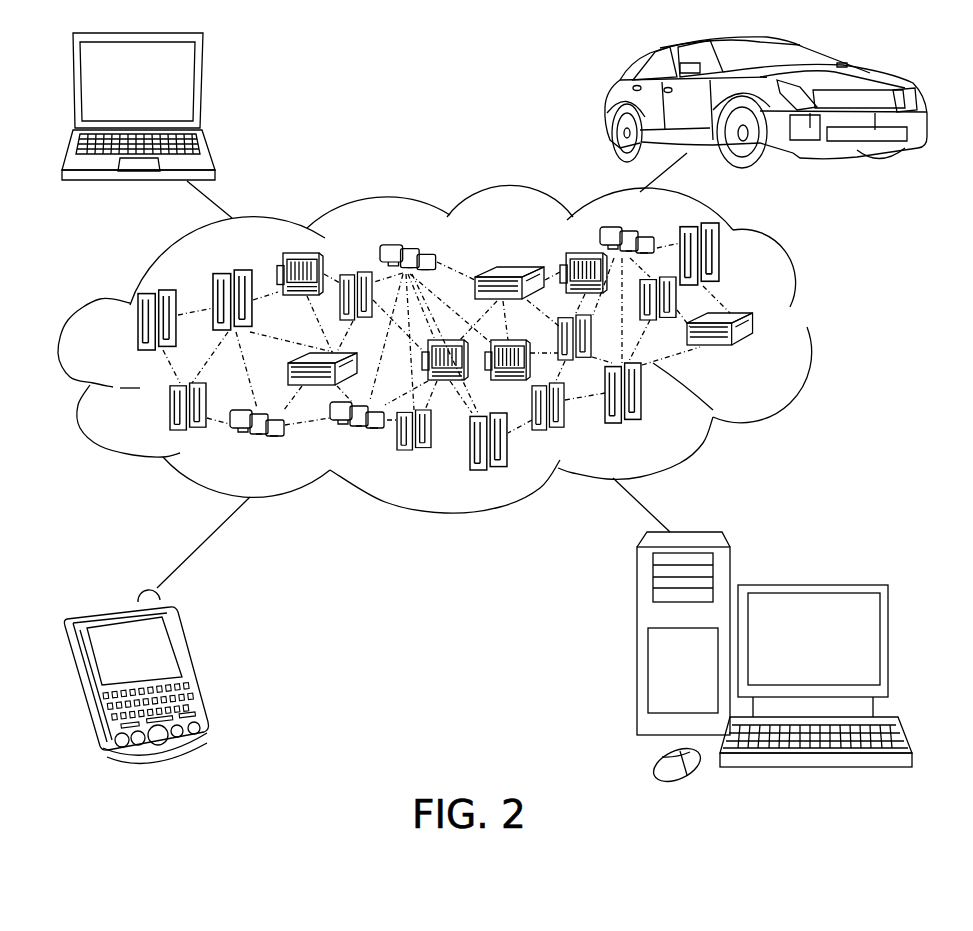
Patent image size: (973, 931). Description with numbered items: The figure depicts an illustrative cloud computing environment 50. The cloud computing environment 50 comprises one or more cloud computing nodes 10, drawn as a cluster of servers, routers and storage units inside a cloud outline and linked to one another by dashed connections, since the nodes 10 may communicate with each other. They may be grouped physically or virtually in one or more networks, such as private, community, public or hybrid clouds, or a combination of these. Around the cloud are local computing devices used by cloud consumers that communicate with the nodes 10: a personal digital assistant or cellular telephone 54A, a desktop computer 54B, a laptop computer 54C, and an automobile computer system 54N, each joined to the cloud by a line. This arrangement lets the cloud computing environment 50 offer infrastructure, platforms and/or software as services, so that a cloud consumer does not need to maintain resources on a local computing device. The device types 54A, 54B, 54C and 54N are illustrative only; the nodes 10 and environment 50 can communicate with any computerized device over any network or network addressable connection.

The cloud computing node 10 is at (766, 357).
The cloud computing environment 50 is at (461, 349).
The personal digital assistant or cellular telephone 54A is at (190, 668).
The desktop computer 54B is at (812, 585).
The laptop computer 54C is at (202, 88).
The automobile computer system 54N is at (606, 104).